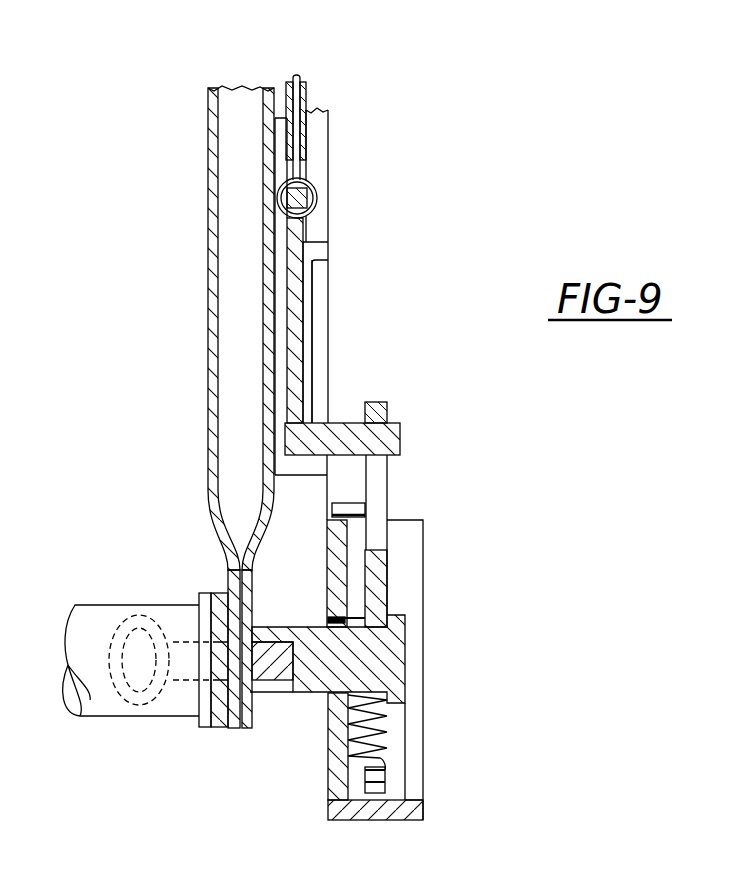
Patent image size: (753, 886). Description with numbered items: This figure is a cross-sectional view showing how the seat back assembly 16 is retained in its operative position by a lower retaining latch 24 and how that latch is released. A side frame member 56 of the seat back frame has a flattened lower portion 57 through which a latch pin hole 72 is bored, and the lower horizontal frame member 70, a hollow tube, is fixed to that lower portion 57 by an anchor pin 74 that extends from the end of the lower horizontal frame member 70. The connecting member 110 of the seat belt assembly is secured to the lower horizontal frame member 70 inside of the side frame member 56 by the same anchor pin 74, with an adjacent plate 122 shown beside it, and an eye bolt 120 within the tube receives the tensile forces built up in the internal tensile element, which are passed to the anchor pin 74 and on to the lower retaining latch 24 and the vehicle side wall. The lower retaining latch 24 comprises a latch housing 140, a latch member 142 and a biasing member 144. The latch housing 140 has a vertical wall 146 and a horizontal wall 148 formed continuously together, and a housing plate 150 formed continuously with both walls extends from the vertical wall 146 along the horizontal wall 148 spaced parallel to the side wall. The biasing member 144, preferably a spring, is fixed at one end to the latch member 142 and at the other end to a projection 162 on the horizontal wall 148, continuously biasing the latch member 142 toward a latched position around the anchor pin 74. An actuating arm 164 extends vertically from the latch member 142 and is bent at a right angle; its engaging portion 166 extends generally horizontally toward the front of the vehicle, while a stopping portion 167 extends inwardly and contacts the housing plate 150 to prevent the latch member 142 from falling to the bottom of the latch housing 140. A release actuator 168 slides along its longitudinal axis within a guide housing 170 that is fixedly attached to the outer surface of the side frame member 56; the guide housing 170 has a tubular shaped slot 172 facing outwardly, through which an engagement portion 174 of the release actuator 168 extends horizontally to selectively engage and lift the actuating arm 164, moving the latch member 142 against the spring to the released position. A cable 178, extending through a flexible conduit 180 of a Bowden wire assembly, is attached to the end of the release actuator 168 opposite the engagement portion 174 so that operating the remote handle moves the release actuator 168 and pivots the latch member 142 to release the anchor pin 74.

The seat back assembly 16 is at (392, 196).
The lower retaining latch 24 is at (466, 652).
The side frame member 56 is at (210, 220).
The lower portion 57 is at (240, 557).
The lower horizontal frame member 70 is at (103, 715).
The latch pin hole 72 is at (258, 680).
The anchor pin 74 is at (287, 627).
The connecting member 110 is at (222, 728).
The eye bolt 120 is at (113, 630).
The plate 122 is at (203, 727).
The latch housing 140 is at (345, 822).
The latch member 142 is at (392, 562).
The biasing member 144 is at (390, 745).
The vertical wall 146 is at (425, 518).
The horizontal wall 148 is at (408, 822).
The housing plate 150 is at (330, 780).
The projection 162 is at (390, 787).
The actuating arm 164 is at (390, 460).
The engaging portion 166 is at (393, 430).
The stopping portion 167 is at (338, 503).
The release actuator 168 is at (303, 334).
The guide housing 170 is at (328, 252).
The slot 172 is at (312, 297).
The engagement portion 174 is at (390, 403).
The cable 178 is at (303, 170).
The flexible conduit 180 is at (307, 92).